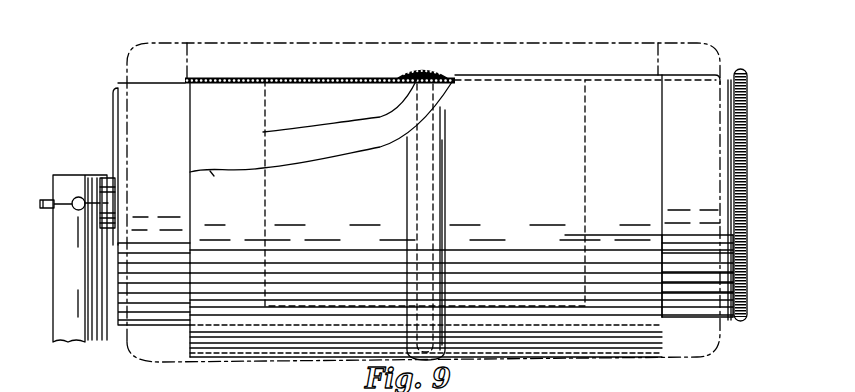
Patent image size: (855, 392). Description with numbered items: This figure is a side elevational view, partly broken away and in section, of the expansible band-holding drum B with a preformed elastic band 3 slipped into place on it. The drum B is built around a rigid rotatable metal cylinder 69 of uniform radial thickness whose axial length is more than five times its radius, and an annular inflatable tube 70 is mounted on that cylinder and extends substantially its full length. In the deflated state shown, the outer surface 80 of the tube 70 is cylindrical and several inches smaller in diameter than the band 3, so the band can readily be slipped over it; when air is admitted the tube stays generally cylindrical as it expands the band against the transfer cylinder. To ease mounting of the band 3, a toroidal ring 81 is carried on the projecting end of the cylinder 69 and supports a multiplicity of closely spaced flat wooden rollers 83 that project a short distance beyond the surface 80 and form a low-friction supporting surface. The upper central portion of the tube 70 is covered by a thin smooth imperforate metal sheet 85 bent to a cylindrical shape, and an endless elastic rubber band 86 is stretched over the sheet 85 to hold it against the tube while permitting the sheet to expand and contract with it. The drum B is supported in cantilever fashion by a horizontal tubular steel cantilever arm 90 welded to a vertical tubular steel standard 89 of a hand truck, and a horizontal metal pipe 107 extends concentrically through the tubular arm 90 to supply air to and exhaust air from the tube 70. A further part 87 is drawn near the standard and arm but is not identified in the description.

The preformed elastic band 3 is at (212, 79).
The rigid rotatable metal cylinder 69 is at (113, 88).
The annular inflatable tube 70 is at (690, 322).
The outer surface of the tube 80 is at (168, 326).
The toroidal ring 81 is at (747, 205).
The flat wooden rollers 83 is at (743, 87).
The metal sheet 85 is at (264, 142).
The endless elastic rubber band 86 is at (423, 69).
The pin 87 is at (81, 196).
The vertical tubular steel standard 89 is at (53, 285).
The horizontal tubular steel cantilever arm 90 is at (110, 183).
The horizontal metal pipe 107 is at (43, 210).
The expansible band-holding drum B is at (100, 91).